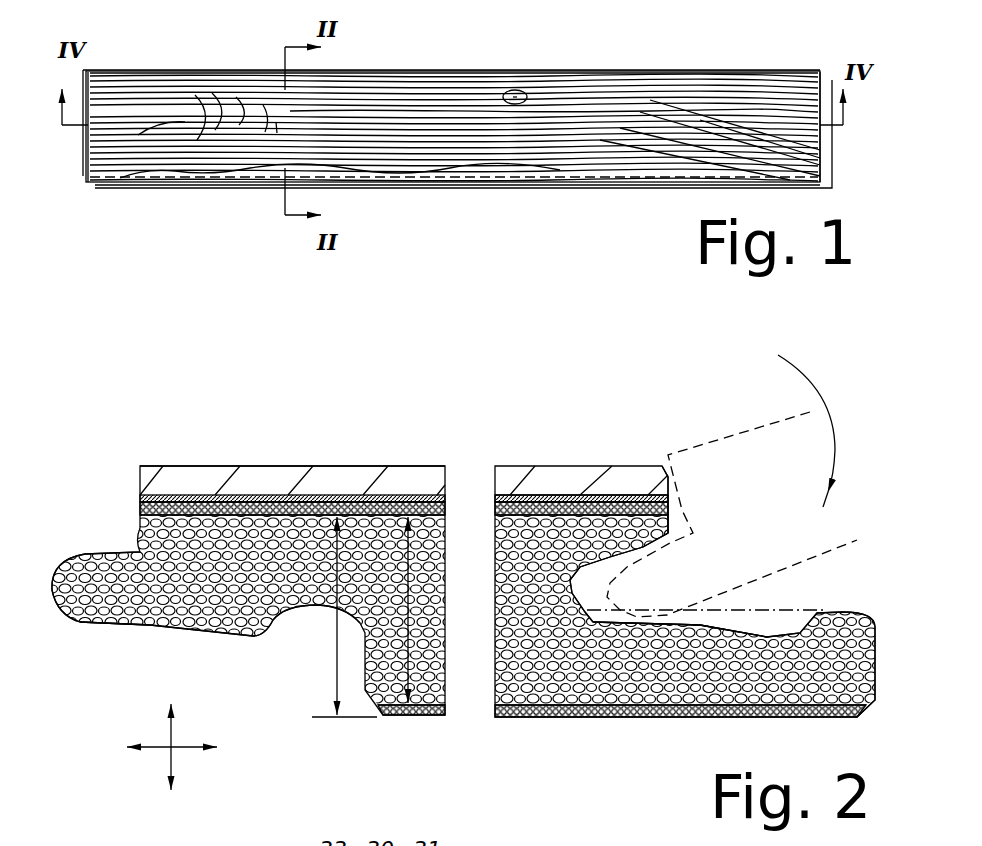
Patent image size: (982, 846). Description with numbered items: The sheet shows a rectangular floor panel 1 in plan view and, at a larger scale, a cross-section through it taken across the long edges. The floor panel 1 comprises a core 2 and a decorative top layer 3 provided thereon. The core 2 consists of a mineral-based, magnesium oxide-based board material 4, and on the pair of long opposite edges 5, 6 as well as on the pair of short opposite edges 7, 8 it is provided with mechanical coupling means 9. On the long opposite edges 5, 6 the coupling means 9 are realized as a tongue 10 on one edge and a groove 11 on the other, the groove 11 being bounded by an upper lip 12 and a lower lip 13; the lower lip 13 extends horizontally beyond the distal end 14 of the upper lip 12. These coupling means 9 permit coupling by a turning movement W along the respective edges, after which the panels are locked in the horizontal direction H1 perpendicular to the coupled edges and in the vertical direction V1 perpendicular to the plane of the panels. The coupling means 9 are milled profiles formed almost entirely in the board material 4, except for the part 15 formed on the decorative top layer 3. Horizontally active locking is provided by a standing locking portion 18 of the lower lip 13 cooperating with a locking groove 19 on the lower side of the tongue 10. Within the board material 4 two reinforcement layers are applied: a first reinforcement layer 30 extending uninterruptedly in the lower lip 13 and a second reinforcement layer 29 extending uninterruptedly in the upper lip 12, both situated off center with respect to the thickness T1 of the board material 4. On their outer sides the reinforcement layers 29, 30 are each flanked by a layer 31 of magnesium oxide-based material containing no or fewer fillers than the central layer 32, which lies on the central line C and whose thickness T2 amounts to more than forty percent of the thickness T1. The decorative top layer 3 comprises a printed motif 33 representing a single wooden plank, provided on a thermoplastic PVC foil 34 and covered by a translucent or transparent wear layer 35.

In FIG. 1, the floor panel 1 is at (459, 130).
In FIG. 2, the floor panel 1 is at (665, 555).
In FIG. 2, the core 2 is at (665, 580).
In FIG. 2, the decorative top layer 3 is at (258, 448).
In FIG. 2, the magnesium oxide-based board material 4 is at (269, 575).
In FIG. 1, the long opposite edge 5 is at (581, 70).
In FIG. 2, the long opposite edge 5 is at (85, 499).
In FIG. 1, the long opposite edge 6 is at (562, 190).
In FIG. 2, the long opposite edge 6 is at (737, 506).
In FIG. 1, the short opposite edge 7 is at (86, 156).
In FIG. 1, the short opposite edge 8 is at (831, 86).
In FIG. 1, the mechanical coupling means 9 is at (428, 60).
In FIG. 2, the mechanical coupling means 9 is at (142, 695).
In FIG. 2, the tongue 10 is at (103, 602).
In FIG. 2, the groove 11 is at (593, 627).
In FIG. 2, the upper lip 12 is at (622, 543).
In FIG. 2, the lower lip 13 is at (680, 637).
In FIG. 2, the distal end 14 is at (667, 520).
In FIG. 2, the part of the coupling means formed on the decorative top layer 15 is at (680, 490).
In FIG. 2, the standing locking portion 18 is at (825, 718).
In FIG. 2, the locking groove 19 is at (298, 625).
In FIG. 2, the second reinforcement layer 29 is at (217, 513).
In FIG. 2, the first reinforcement layer 30 is at (542, 717).
In FIG. 2, the layer of magnesium oxide-based material 31 is at (317, 499).
In FIG. 2, the central layer 32 is at (530, 627).
In FIG. 1, the printed motif 33 is at (458, 104).
In FIG. 2, the thermoplastic foil 34 is at (252, 498).
In FIG. 2, the wear layer 35 is at (258, 447).
In FIG. 2, the turning movement W is at (810, 378).
In FIG. 2, the central line C is at (670, 598).
In FIG. 2, the thickness of the board material T1 is at (337, 668).
In FIG. 2, the thickness of the central layer T2 is at (446, 647).
In FIG. 2, the vertical direction V1 is at (172, 735).
In FIG. 2, the horizontal direction H1 is at (162, 750).